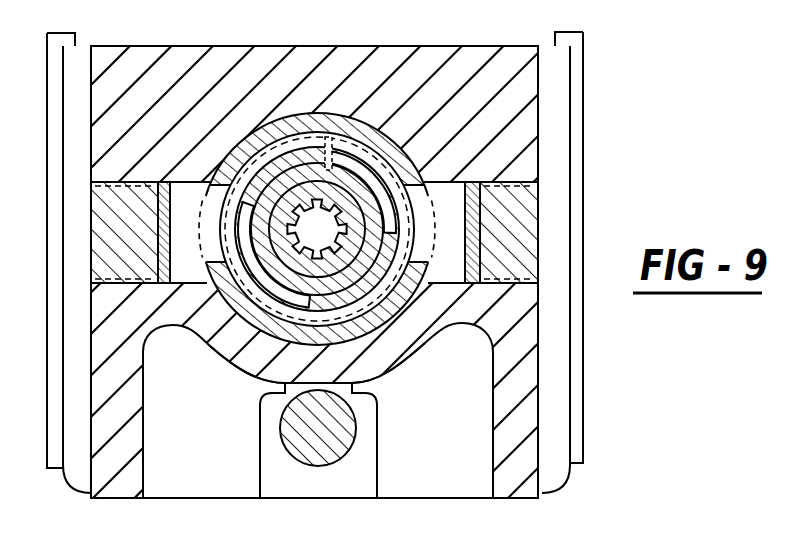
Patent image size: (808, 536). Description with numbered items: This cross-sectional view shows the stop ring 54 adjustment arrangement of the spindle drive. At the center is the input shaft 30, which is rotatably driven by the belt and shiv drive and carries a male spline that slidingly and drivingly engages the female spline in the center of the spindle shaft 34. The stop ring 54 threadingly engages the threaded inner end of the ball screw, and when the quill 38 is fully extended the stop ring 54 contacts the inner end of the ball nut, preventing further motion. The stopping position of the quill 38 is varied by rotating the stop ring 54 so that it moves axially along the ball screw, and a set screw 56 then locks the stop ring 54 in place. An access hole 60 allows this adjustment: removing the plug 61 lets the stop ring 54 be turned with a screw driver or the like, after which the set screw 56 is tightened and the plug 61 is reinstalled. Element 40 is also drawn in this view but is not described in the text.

The input shaft 30 is at (330, 240).
The spindle shaft 34 is at (387, 359).
The quill 38 is at (212, 352).
The right cavity 40 is at (508, 421).
The stop ring 54 is at (386, 154).
The set screw 56 is at (331, 142).
The access hole 60 is at (206, 223).
The plug 61 is at (103, 226).